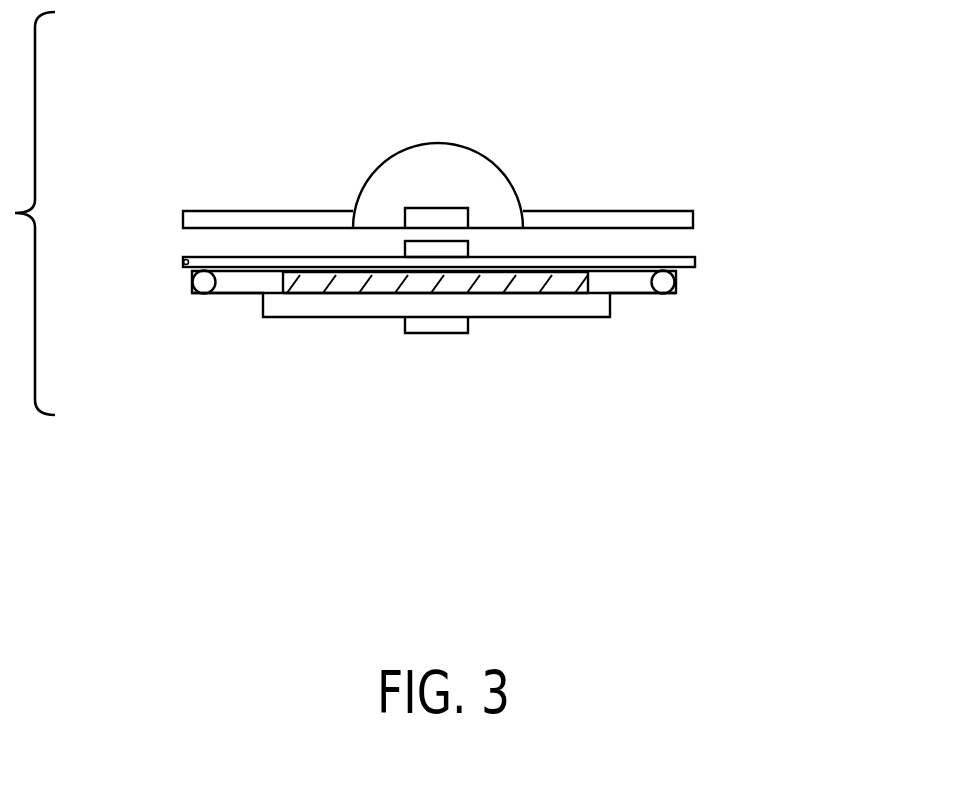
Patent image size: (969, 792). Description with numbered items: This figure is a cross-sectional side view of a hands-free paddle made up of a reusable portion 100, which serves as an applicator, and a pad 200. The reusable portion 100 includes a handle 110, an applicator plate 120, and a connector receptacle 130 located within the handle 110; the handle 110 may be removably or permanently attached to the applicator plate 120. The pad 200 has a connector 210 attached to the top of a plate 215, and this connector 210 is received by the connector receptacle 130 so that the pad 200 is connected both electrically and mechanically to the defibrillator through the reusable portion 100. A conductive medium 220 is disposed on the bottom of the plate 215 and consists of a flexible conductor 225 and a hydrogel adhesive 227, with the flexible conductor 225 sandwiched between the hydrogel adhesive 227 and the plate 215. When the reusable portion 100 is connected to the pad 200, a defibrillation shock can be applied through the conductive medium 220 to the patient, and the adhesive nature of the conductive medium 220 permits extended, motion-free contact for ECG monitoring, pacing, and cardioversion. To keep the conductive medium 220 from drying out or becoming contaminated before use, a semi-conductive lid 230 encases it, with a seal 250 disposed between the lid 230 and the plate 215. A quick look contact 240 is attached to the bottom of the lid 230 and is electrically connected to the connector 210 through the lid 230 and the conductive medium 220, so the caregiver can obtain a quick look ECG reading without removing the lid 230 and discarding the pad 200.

The reusable portion 100 is at (612, 78).
The handle 110 is at (438, 142).
The applicator plate 120 is at (631, 211).
The connector receptacle 130 is at (470, 219).
The pad 200 is at (794, 278).
The connector 210 is at (405, 252).
The plate 215 is at (186, 270).
The conductive medium 220 is at (310, 293).
The flexible conductor 225 is at (352, 275).
The hydrogel adhesive 227 is at (393, 293).
The lid 230 is at (624, 293).
The quick look contact 240 is at (437, 333).
The seal 250 is at (678, 280).